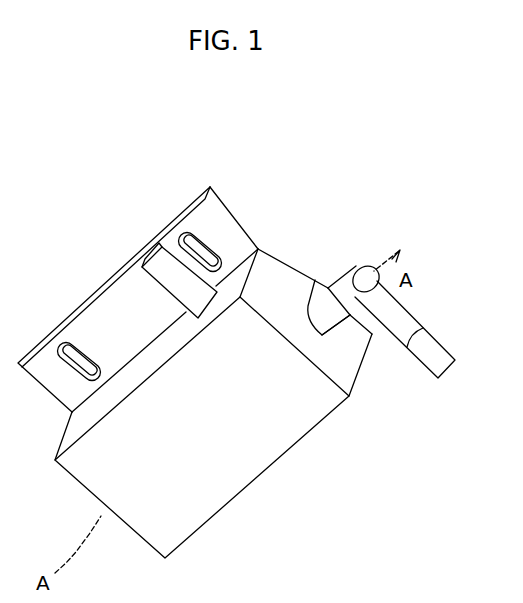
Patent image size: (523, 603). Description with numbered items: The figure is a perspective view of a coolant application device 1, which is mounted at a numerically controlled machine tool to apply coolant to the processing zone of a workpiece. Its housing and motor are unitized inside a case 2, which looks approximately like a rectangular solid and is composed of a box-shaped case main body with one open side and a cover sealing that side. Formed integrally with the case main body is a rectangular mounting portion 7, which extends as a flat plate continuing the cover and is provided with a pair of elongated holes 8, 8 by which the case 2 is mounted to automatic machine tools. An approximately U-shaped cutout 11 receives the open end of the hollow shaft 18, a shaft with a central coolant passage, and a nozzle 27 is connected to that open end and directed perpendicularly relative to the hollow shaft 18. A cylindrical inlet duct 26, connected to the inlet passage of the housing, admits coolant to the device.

The coolant application device 1 is at (324, 201).
The case 2 is at (281, 267).
The mounting portion 7 is at (107, 313).
The elongated holes 8 is at (196, 247).
The cutout 11 is at (308, 310).
The hollow shaft 18 is at (330, 320).
The inlet duct 26 is at (170, 286).
The nozzle 27 is at (402, 313).